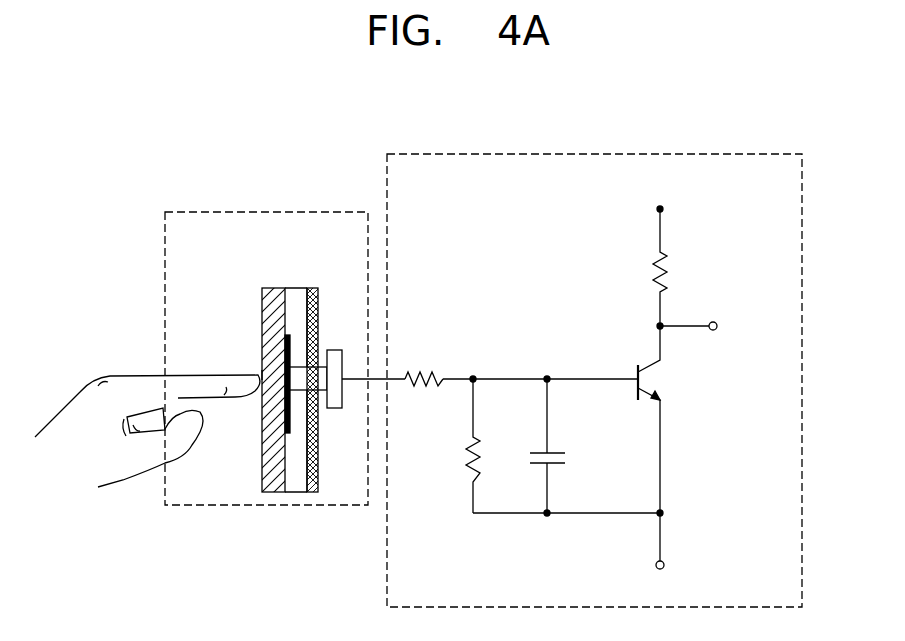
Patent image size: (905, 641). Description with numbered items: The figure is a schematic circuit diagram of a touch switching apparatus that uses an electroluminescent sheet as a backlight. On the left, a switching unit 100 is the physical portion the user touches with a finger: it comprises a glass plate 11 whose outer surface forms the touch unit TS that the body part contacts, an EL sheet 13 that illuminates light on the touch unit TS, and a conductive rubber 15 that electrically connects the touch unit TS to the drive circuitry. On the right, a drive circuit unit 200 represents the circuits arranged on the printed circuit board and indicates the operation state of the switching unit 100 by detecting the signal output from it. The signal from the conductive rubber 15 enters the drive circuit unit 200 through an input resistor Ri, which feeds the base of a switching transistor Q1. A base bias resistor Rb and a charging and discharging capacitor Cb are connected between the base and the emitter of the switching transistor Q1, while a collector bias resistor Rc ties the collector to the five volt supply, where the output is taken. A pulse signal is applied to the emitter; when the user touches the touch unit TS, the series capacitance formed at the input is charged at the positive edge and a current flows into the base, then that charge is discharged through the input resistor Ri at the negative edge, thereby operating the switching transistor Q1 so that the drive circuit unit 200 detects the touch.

The switching unit 100 is at (266, 212).
The drive circuit unit 200 is at (618, 154).
The glass plate 11 is at (267, 313).
The EL sheet 13 is at (320, 310).
The conductive rubber 15 is at (298, 367).
The touch unit TS is at (260, 373).
The input resistor Ri is at (424, 365).
The base bias resistor Rb is at (490, 446).
The charging and discharging capacitor Cb is at (564, 446).
The collector bias resistor Rc is at (677, 267).
The switching transistor Q1 is at (665, 419).